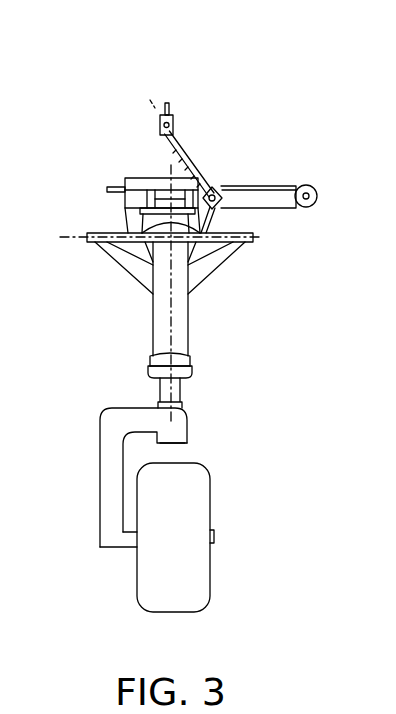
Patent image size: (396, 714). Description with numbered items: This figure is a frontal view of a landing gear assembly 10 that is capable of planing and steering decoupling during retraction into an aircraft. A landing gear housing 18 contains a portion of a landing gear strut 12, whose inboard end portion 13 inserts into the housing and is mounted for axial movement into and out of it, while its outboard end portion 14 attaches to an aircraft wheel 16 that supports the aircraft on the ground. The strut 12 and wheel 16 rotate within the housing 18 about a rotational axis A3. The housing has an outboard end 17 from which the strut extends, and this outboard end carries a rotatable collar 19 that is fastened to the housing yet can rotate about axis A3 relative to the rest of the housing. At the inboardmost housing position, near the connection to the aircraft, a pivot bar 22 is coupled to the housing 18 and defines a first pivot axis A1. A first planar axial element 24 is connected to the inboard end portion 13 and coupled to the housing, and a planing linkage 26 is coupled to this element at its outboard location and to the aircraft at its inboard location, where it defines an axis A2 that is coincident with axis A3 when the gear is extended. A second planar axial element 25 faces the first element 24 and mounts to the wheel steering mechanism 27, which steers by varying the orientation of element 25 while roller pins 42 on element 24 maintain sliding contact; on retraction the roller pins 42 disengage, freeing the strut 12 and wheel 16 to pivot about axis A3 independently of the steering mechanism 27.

The landing gear assembly 10 is at (58, 288).
The landing gear strut 12 is at (98, 465).
The inboard end portion 13 is at (158, 393).
The outboard end portion 14 is at (100, 547).
The aircraft wheel 16 is at (208, 573).
The outboard end 17 is at (193, 370).
The landing gear housing 18 is at (187, 325).
The rotatable collar 19 is at (153, 360).
The pivot bar 22 is at (247, 243).
The first planar axial element 24 is at (142, 210).
The second planar axial element 25 is at (145, 203).
The planing linkage 26 is at (182, 152).
The wheel steering mechanism 27 is at (298, 210).
The roller pins 42 is at (180, 195).
The first pivot axis A1 is at (95, 243).
The axis A2 is at (200, 173).
The rotational axis A3 is at (172, 347).